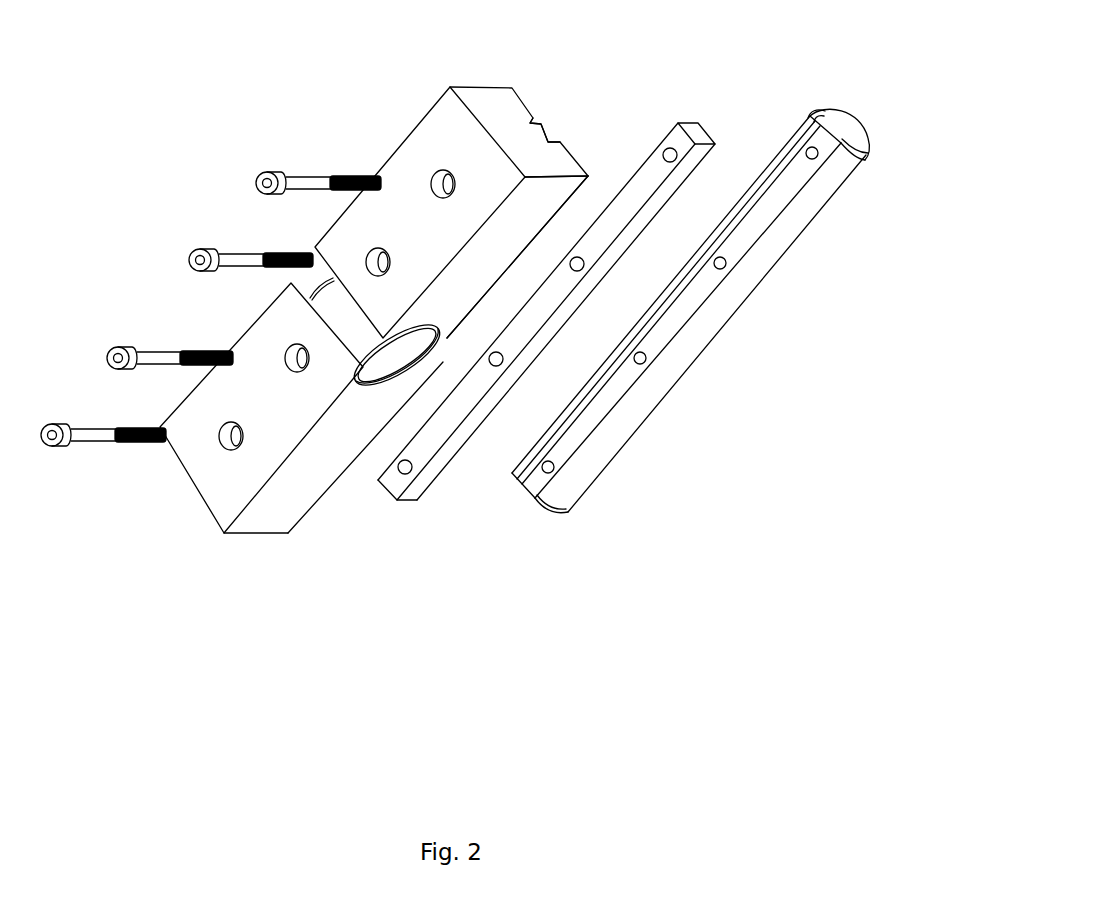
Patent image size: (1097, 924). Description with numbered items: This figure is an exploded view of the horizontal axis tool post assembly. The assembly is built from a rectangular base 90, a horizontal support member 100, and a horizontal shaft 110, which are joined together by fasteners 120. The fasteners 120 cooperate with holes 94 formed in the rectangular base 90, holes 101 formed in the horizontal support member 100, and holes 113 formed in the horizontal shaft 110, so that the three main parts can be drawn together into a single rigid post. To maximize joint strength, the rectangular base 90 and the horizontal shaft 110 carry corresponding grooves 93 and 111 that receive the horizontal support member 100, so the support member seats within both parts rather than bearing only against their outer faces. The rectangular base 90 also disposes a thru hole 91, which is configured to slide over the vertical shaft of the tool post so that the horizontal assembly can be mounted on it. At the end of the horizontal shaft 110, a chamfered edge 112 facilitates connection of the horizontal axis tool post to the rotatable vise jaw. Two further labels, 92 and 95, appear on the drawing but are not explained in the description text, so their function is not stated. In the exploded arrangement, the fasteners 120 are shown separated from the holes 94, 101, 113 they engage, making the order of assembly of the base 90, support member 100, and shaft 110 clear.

The rectangular base 90 is at (222, 485).
The thru hole 91 is at (372, 368).
The upper clamp block 92 is at (424, 354).
The groove 93 is at (547, 133).
The holes 94 is at (452, 192).
The side face of upper clamp block 95 is at (492, 248).
The horizontal support member 100 is at (688, 122).
The holes 101 is at (673, 160).
The horizontal shaft 110 is at (725, 332).
The groove 111 is at (817, 123).
The chamfered edge 112 is at (863, 158).
The holes 113 is at (815, 158).
The fasteners 120 is at (280, 171).